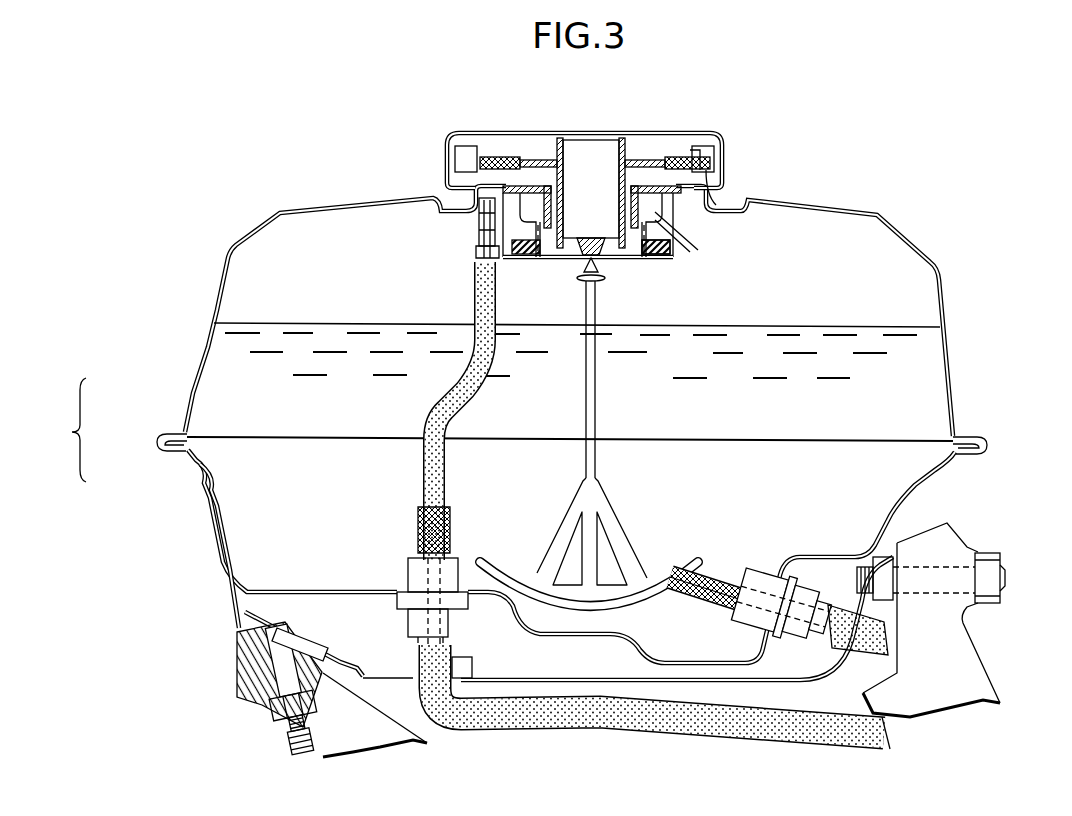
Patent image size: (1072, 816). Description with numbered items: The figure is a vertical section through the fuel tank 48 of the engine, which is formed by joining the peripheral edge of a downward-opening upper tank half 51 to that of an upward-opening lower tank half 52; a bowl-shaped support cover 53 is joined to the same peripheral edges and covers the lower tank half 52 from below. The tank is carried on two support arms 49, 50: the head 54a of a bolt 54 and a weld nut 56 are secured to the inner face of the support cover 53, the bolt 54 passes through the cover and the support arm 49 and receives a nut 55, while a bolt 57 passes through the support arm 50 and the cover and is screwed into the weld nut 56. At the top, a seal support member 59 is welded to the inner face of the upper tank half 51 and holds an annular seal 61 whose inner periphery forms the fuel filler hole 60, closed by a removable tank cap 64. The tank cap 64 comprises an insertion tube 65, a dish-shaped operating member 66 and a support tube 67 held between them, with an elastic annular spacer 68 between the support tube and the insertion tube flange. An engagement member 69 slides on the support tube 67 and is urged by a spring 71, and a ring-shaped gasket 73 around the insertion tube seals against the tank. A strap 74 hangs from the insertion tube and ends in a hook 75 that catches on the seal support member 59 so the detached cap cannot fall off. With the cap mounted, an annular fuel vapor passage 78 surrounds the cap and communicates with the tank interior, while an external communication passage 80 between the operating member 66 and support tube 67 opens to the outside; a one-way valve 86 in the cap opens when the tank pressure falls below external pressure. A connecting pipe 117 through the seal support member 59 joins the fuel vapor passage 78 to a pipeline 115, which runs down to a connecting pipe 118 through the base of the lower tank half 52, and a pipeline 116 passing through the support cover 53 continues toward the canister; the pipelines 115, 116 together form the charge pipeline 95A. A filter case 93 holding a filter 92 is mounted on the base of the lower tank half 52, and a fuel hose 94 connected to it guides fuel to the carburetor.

The fuel tank 48 is at (64, 430).
The support arm 49 is at (252, 675).
The support arm 50 is at (950, 548).
The upper tank half 51 is at (193, 375).
The lower tank half 52 is at (205, 495).
The support cover 53 is at (211, 540).
The bolt 54 is at (253, 757).
The head of bolt 54a is at (293, 637).
The nut 55 is at (247, 713).
The weld nut 56 is at (887, 557).
The bolt 57 is at (995, 558).
The seal support member 59 is at (683, 252).
The fuel filler hole 60 is at (607, 256).
The seal 61 is at (660, 258).
The tank cap 64 is at (603, 128).
The insertion tube 65 is at (673, 247).
The operating member 66 is at (580, 138).
The support tube 67 is at (548, 152).
The spacer 68 is at (683, 157).
The engagement member 69 is at (663, 220).
The spring 71 is at (542, 260).
The gasket 73 is at (700, 152).
The strap 74 is at (585, 402).
The hook 75 is at (493, 567).
The fuel vapor passage 78 is at (695, 202).
The external communication passage 80 is at (604, 184).
The one-way valve 86 is at (580, 262).
The filter 92 is at (725, 560).
The filter case 93 is at (770, 580).
The fuel hose 94 is at (850, 647).
The charge pipeline 95A is at (577, 738).
The pipeline 115 is at (433, 420).
The pipeline 116 is at (665, 727).
The connecting pipe 117 is at (468, 212).
The connecting pipe 118 is at (410, 572).